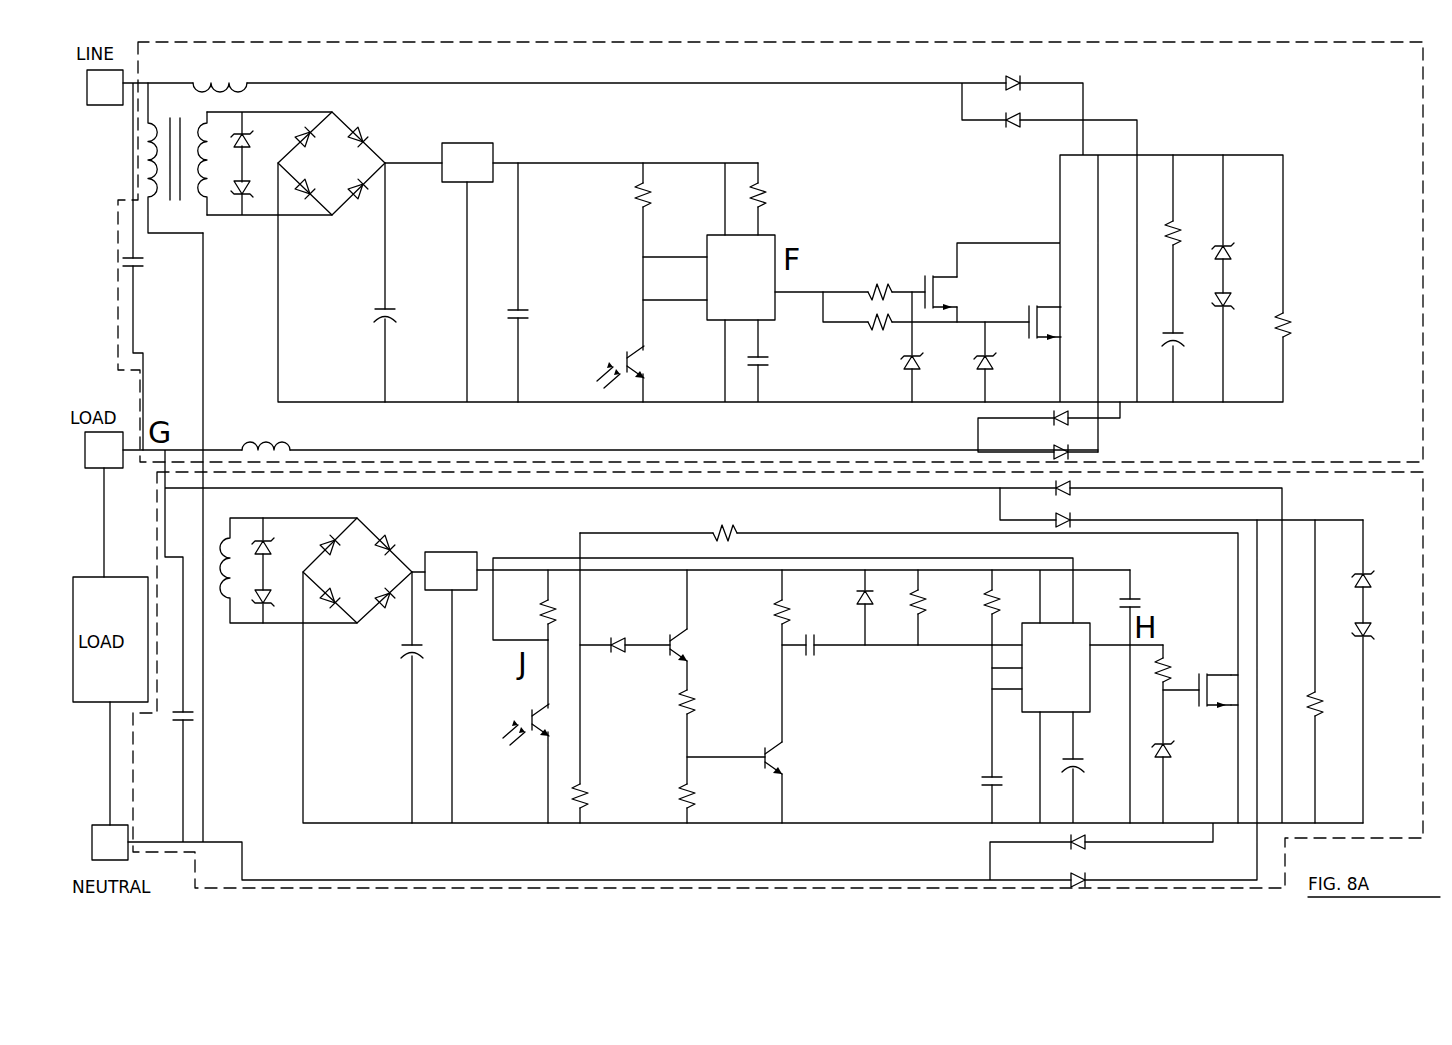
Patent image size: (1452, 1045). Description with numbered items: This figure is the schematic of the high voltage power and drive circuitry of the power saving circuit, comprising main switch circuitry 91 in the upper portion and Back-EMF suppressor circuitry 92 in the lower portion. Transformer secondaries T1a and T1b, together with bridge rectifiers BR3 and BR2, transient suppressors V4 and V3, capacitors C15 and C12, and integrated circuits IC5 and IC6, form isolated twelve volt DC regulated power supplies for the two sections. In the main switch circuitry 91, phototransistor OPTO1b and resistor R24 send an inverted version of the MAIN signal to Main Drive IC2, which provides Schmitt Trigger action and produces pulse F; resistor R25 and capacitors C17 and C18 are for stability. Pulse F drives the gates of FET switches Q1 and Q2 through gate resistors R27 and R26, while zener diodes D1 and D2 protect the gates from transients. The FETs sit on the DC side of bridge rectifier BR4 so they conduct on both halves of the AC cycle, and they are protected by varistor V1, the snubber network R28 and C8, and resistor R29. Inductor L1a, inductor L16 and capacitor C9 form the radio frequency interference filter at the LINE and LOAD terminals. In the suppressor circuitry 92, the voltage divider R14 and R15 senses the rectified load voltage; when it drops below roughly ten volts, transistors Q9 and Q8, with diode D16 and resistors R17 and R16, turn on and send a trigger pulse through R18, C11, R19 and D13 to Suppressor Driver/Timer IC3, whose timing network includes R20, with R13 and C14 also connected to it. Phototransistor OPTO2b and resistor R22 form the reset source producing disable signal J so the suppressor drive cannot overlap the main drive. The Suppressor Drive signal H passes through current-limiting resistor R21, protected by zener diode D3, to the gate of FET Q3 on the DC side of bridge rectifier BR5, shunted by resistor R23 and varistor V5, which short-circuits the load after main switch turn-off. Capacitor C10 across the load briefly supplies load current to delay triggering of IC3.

The inductor L1a is at (220, 72).
The transformer secondary T1a is at (177, 159).
The transient suppressor V4 is at (269, 163).
The bridge rectifier BR3 is at (331, 155).
The capacitor C9 is at (146, 272).
The integrated circuit (voltage regulator) IC5 is at (467, 162).
The capacitor C15 is at (778, 493).
The capacitor C18 is at (500, 282).
The resistor R24 is at (613, 256).
The resistor R25 is at (780, 199).
The Main Drive integrated circuit IC2 is at (732, 276).
The capacitor C17 is at (776, 369).
The phototransistor OPTO1b is at (598, 363).
The resistor R27 is at (872, 270).
The resistor R26 is at (926, 325).
The zener diode D1 is at (923, 347).
The zener diode D2 is at (999, 362).
The FET switch Q1 is at (954, 293).
The FET switch Q2 is at (1055, 323).
The snubber resistor R28 is at (1187, 244).
The varistor V1 is at (1238, 278).
The snubber capacitor C8 is at (1184, 367).
The resistor R29 is at (1312, 325).
The main switch circuitry 91 is at (1348, 181).
The bridge rectifier BR4 is at (1049, 430).
The inductor L16 is at (266, 430).
The bridge rectifier BR5 is at (1181, 504).
The capacitor C10 is at (163, 734).
The transformer secondary T1b is at (284, 584).
The transient suppressor V3 is at (272, 570).
The bridge rectifier BR2 is at (361, 564).
The integrated circuit (voltage regulator) IC6 is at (451, 571).
The capacitor C12 is at (394, 697).
The resistor R22 is at (526, 605).
The photo-sensitive device (phototransistor) OPTO2b is at (506, 731).
The resistor R15 is at (909, 664).
The resistor R14 is at (601, 678).
The diode D16 is at (625, 658).
The transistor Q9 is at (693, 630).
The resistor R17 is at (708, 737).
The resistor R16 is at (708, 803).
The transistor Q8 is at (787, 723).
The resistor R18 is at (757, 597).
The capacitor C11 is at (902, 659).
The diode D13 is at (841, 607).
The resistor R19 is at (899, 607).
The timing resistor R20 is at (969, 607).
The resistor R13 is at (970, 734).
The Suppressor Driver/Timer IC3 is at (1054, 666).
The capacitor C14 is at (1087, 779).
The current-limiting resistor R21 is at (1181, 690).
The zener diode D3 is at (1174, 782).
The FET switch Q3 is at (1213, 704).
The resistor R23 is at (1328, 671).
The varistor V5 is at (1350, 671).
The Back-EMF suppressor circuitry 92 is at (1374, 677).